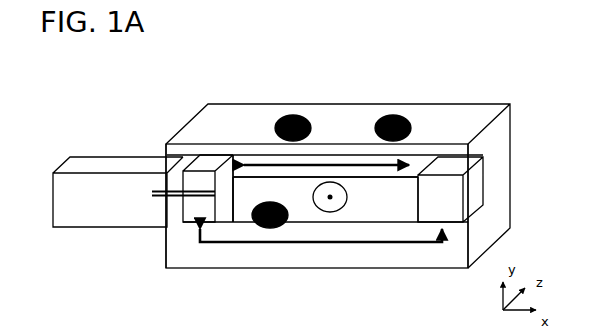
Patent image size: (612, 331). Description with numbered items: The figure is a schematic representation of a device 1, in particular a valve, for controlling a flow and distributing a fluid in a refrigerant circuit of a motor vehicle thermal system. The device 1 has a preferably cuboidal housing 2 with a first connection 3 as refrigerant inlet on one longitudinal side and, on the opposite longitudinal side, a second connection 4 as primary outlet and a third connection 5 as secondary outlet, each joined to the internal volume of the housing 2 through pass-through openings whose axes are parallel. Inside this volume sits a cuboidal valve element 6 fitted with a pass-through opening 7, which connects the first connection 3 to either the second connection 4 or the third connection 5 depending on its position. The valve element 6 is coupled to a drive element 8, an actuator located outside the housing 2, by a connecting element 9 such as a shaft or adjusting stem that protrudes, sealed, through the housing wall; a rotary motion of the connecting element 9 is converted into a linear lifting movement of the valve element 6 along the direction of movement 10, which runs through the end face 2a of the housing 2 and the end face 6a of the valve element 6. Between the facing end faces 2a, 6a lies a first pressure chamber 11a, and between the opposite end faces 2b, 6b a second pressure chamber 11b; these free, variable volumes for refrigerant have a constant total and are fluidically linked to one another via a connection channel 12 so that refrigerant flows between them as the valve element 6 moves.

The device 1 is at (519, 97).
The housing 2 is at (213, 112).
The end face of the housing 2a is at (178, 224).
The end face of the housing 2b is at (476, 183).
The first connection 3 is at (273, 228).
The second connection 4 is at (282, 120).
The third connection 5 is at (398, 118).
The valve element 6 is at (351, 158).
The end face of the valve element 6a is at (228, 200).
The end face of the valve element 6b is at (434, 193).
The pass-through opening 7 is at (330, 197).
The drive element 8 is at (117, 166).
The connecting element 9 is at (178, 195).
The direction of movement 10 is at (401, 164).
The first pressure chamber 11a is at (200, 163).
The second pressure chamber 11b is at (458, 163).
The connection channel 12 is at (346, 245).